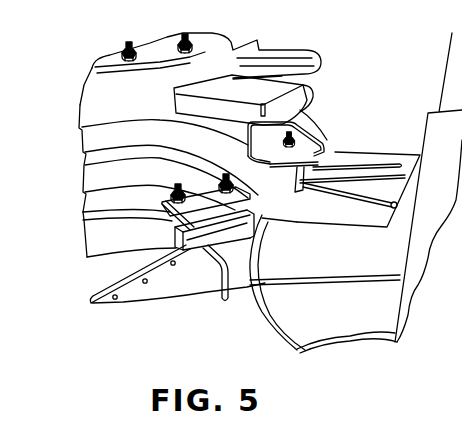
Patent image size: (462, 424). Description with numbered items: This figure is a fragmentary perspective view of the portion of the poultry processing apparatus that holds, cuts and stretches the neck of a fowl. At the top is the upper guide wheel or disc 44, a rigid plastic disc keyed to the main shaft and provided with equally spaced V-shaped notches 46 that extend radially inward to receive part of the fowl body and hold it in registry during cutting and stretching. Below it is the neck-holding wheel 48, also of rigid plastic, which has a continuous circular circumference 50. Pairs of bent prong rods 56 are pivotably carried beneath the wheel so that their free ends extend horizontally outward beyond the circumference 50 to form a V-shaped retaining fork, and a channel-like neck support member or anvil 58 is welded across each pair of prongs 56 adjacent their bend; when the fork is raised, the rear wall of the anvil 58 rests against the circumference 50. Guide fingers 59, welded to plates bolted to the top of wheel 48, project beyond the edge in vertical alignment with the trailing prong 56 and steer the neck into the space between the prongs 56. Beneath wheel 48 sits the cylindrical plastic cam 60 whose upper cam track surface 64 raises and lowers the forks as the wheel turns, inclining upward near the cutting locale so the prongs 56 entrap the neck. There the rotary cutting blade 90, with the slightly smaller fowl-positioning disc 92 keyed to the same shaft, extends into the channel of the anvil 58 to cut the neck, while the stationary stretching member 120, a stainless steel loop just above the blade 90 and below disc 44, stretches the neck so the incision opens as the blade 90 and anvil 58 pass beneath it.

The upper guide wheel or disc 44 is at (233, 43).
The V-shaped notch or recess 46 is at (221, 100).
The neck-holding wheel or disc 48 is at (97, 177).
The circular circumference 50 is at (88, 227).
The prong rod 56 is at (222, 300).
The channel-like neck support member or anvil 58 is at (198, 250).
The guide finger 59 is at (168, 217).
The cam 60 is at (160, 291).
The cam track surface 64 is at (117, 283).
The cutting blade 90 is at (348, 259).
The fowl-positioning disc 92 is at (345, 309).
The stretching member 120 is at (310, 130).